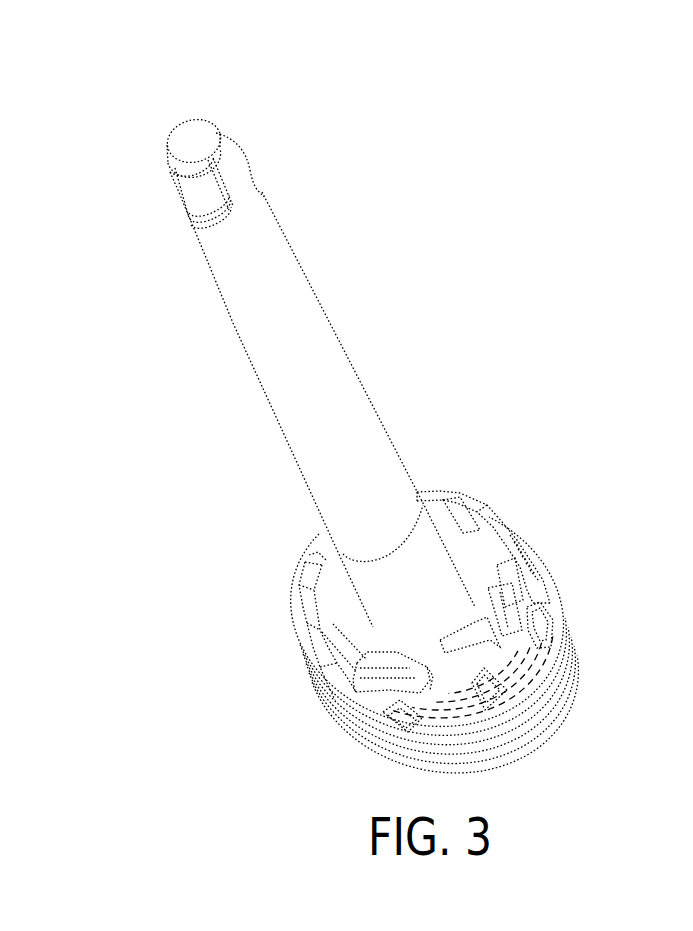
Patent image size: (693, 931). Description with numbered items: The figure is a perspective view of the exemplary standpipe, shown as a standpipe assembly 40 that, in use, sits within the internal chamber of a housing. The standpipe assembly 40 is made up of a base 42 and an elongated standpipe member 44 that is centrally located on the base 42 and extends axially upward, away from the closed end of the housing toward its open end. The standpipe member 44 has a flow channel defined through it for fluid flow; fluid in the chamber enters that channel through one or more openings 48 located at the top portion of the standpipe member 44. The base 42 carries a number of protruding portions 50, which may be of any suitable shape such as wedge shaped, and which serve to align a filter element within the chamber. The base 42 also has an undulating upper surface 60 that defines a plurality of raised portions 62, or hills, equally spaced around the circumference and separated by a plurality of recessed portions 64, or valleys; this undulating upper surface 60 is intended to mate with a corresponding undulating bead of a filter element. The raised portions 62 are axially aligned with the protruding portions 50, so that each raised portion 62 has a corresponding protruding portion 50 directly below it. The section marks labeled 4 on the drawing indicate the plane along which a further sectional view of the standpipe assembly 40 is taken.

The standpipe assembly 40 is at (372, 457).
The base 42 is at (432, 615).
The standpipe member 44 is at (291, 370).
The openings 48 is at (192, 192).
The protruding portions 50 is at (494, 698).
The undulating upper surface 60 is at (495, 510).
The raised portions 62 is at (310, 582).
The recessed portions 64 is at (433, 677).
The section line 4 is at (557, 590).